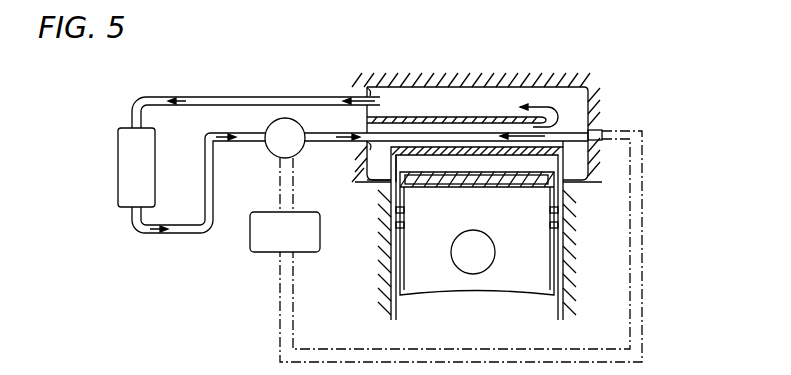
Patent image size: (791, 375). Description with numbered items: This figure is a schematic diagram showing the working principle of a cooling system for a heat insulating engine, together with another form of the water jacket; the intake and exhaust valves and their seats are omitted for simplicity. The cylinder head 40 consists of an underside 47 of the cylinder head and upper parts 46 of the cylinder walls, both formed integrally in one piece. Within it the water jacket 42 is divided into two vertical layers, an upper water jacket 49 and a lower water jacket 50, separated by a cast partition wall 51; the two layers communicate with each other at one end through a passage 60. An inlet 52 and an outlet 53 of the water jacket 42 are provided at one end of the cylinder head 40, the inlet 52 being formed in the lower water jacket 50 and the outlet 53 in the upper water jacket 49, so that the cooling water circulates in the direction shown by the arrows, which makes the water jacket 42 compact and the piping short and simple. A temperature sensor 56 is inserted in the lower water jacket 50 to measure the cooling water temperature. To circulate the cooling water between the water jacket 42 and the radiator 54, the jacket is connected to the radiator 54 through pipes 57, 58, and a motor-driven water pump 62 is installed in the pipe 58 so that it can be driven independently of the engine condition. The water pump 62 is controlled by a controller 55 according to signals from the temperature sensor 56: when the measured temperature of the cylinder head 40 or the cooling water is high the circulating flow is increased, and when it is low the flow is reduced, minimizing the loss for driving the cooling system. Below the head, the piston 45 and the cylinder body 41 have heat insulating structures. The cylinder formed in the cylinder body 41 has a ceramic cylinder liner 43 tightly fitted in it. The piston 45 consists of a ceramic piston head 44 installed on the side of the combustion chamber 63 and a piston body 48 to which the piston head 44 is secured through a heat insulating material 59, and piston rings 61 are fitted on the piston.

The cylinder head 40 is at (556, 77).
The cylinder body 41 is at (566, 285).
The water jacket 42 is at (505, 105).
The ceramic cylinder liner 43 is at (564, 255).
The piston head 44 is at (410, 210).
The piston 45 is at (472, 292).
The upper parts of the cylinder walls 46 is at (372, 185).
The underside of the cylinder head 47 is at (432, 150).
The piston body 48 is at (416, 240).
The upper water jacket 49 is at (425, 93).
The lower water jacket 50 is at (455, 133).
The partition wall 51 is at (482, 117).
The inlet 52 is at (362, 150).
The outlet 53 is at (371, 87).
The radiator 54 is at (127, 140).
The controller 55 is at (260, 242).
The temperature sensor 56 is at (573, 120).
The pipe 57 is at (267, 104).
The pipe 58 is at (205, 165).
The heat insulating material 59 is at (503, 185).
The passage 60 is at (575, 122).
The piston rings 61 is at (546, 227).
The water pump 62 is at (274, 150).
The combustion chamber 63 is at (466, 165).